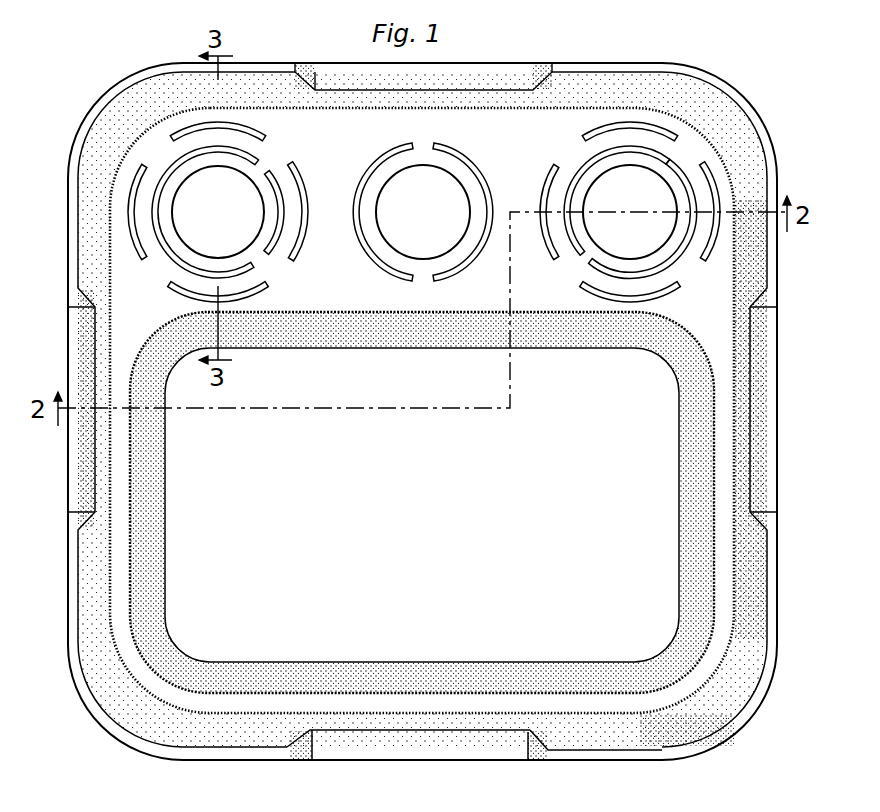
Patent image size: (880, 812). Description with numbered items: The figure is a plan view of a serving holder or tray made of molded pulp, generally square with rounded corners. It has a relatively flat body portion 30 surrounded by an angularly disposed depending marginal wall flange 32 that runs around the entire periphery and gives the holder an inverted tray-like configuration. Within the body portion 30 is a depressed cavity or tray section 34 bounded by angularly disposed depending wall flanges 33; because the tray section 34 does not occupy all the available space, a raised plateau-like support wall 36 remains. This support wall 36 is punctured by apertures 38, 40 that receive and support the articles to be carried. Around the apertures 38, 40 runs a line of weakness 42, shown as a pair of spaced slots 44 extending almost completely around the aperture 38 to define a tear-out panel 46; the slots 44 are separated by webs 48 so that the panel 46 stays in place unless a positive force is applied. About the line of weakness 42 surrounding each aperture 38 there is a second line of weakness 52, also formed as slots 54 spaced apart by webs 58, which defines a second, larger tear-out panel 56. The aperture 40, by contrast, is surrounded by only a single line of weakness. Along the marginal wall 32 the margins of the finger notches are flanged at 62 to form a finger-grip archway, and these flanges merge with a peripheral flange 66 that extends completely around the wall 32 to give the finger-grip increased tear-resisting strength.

The body portion 30 is at (354, 123).
The marginal wall flange 32 is at (630, 735).
The depending wall flanges 33 is at (645, 338).
The tray section 34 is at (457, 517).
The support wall 36 is at (343, 163).
The aperture 38 is at (173, 191).
The aperture 40 is at (395, 256).
The line of weakness 42 is at (253, 268).
The slots 44 is at (366, 182).
The tear-out panel 46 is at (372, 194).
The webs 48 is at (675, 163).
The second line of weakness 52 is at (554, 177).
The slots 54 is at (597, 126).
The second tear-out panel 56 is at (634, 135).
The webs 58 is at (693, 160).
The flanges 62 is at (418, 752).
The peripheral flange 66 is at (590, 757).